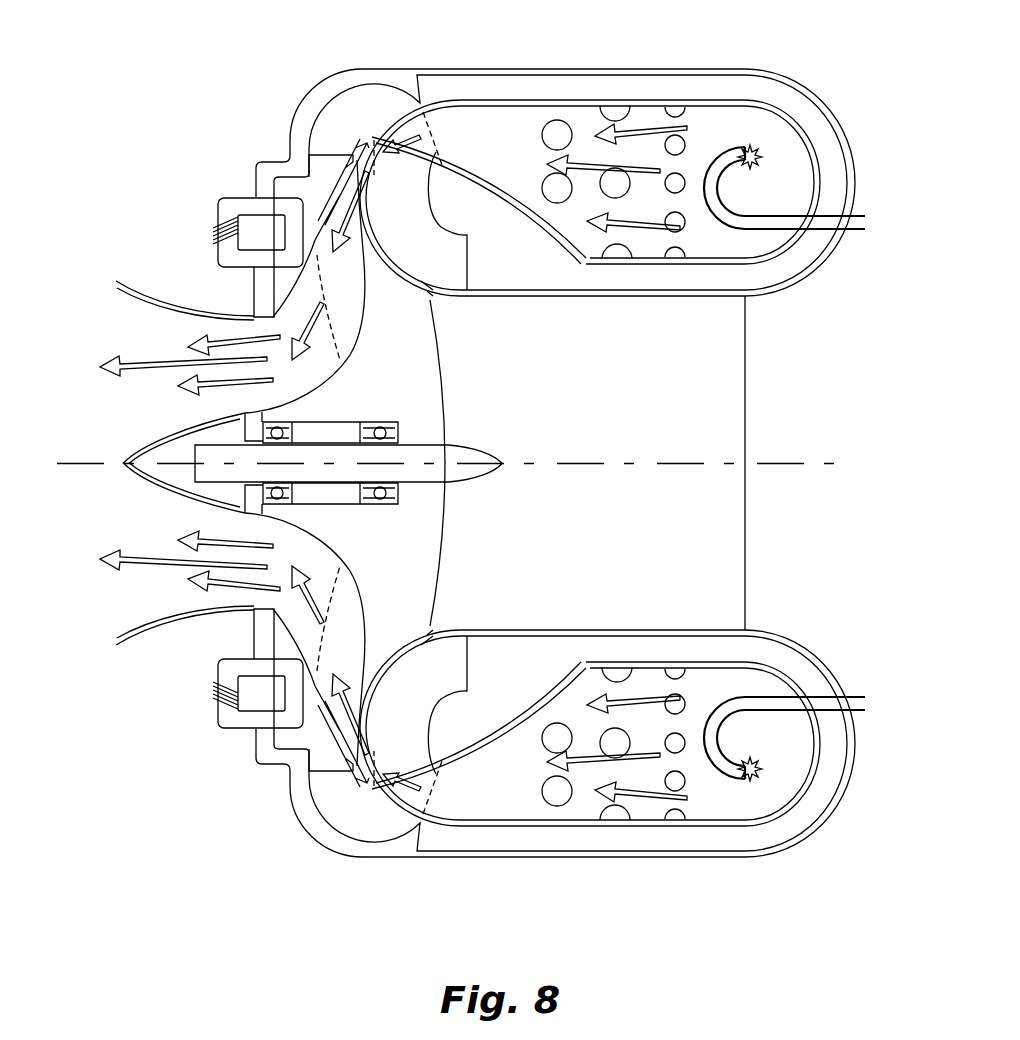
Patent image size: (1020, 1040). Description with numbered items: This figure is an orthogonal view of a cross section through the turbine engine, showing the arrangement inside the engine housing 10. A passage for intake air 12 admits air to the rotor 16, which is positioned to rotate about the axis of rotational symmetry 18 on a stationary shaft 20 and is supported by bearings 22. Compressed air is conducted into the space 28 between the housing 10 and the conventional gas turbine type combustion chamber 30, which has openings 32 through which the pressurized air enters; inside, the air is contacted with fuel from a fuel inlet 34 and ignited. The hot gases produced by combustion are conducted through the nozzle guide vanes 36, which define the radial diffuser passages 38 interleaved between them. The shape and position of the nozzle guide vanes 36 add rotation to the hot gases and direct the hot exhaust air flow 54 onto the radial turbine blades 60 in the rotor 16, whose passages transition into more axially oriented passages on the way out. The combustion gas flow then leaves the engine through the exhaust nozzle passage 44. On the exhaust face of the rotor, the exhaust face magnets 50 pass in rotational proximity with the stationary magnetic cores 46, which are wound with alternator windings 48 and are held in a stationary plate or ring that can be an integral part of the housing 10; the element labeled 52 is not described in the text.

The engine housing 10 is at (607, 68).
The passage for intake air 12 is at (765, 386).
The rotor 16 is at (380, 363).
The axis of rotational symmetry 18 is at (777, 463).
The stationary shaft 20 is at (312, 463).
The bearings 22 is at (378, 422).
The space 28 is at (615, 99).
The combustion chamber 30 is at (629, 219).
The openings 32 is at (568, 140).
The fuel inlet 34 is at (750, 147).
The nozzle guide vanes 36 is at (437, 170).
The radial diffuser passages 38 is at (400, 234).
The exhaust nozzle passage 44 is at (134, 341).
The stationary magnetic cores 46 is at (237, 195).
The alternator windings 48 is at (211, 229).
The exhaust face magnets 50 is at (307, 220).
The lower flow guide 52 is at (257, 641).
The hot exhaust air flow 54 is at (423, 112).
The radial turbine blades 60 is at (336, 278).